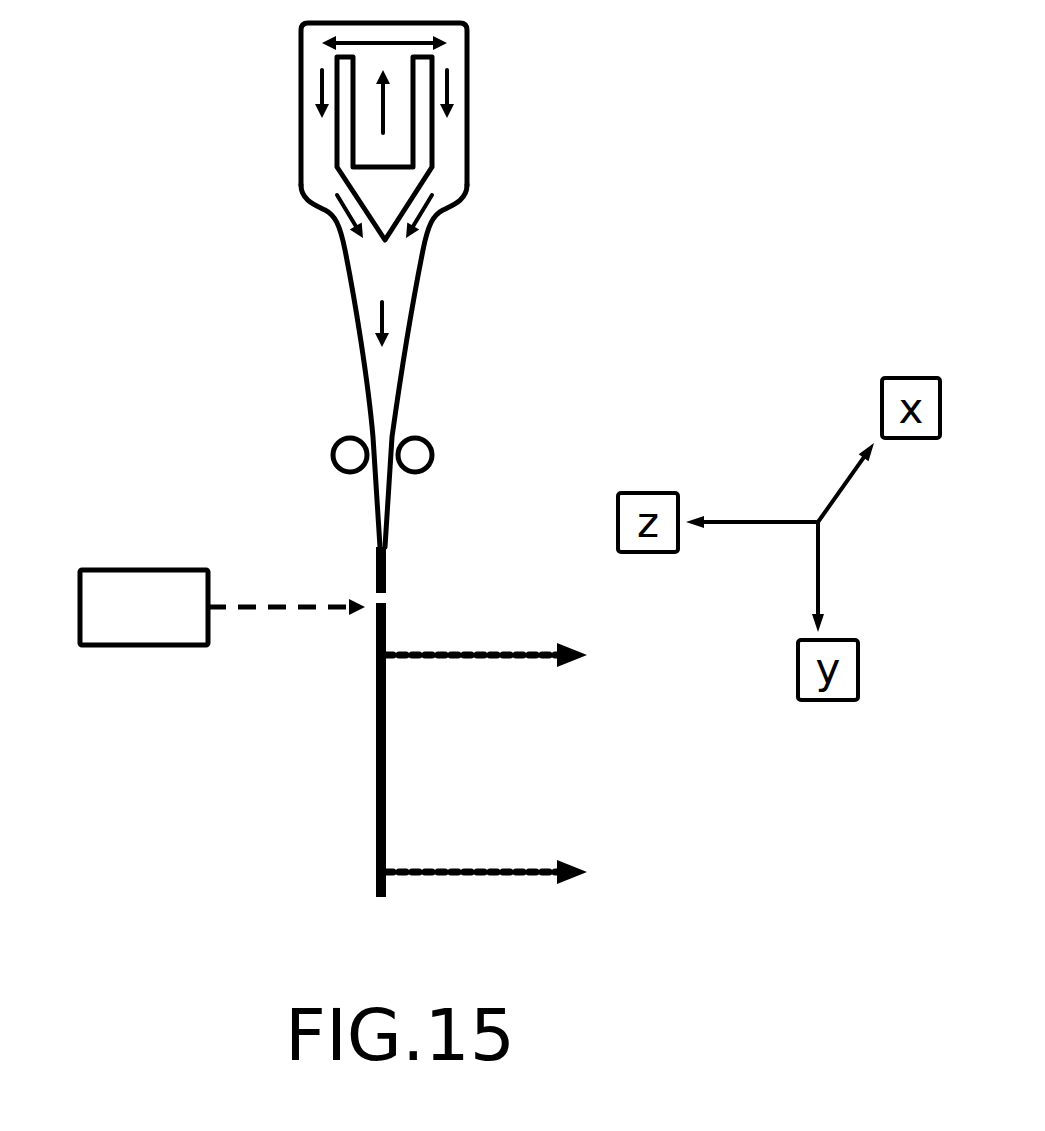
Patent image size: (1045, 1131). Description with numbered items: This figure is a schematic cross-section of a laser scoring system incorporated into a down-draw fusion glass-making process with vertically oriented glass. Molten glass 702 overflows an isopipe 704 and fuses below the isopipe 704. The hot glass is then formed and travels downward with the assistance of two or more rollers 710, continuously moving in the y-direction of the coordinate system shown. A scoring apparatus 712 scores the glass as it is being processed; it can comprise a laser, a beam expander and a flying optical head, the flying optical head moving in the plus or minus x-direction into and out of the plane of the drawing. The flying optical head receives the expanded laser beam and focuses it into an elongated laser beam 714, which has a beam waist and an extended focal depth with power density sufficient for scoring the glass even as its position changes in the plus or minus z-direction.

The molten glass 702 is at (397, 145).
The isopipe 704 is at (345, 178).
The rollers 710 is at (325, 447).
The scoring apparatus 712 is at (178, 630).
The elongated laser beam 714 is at (246, 596).